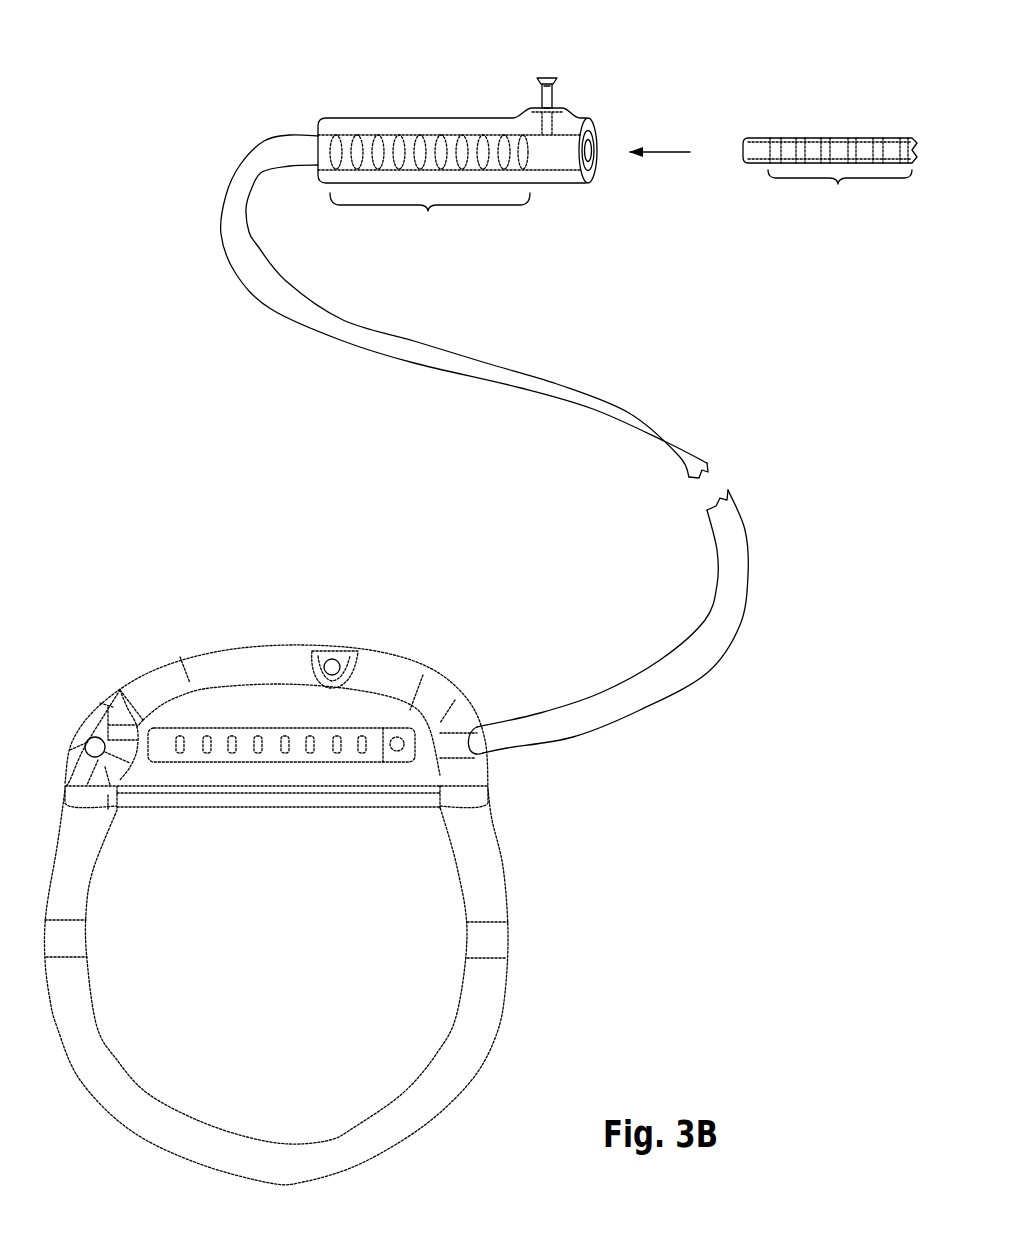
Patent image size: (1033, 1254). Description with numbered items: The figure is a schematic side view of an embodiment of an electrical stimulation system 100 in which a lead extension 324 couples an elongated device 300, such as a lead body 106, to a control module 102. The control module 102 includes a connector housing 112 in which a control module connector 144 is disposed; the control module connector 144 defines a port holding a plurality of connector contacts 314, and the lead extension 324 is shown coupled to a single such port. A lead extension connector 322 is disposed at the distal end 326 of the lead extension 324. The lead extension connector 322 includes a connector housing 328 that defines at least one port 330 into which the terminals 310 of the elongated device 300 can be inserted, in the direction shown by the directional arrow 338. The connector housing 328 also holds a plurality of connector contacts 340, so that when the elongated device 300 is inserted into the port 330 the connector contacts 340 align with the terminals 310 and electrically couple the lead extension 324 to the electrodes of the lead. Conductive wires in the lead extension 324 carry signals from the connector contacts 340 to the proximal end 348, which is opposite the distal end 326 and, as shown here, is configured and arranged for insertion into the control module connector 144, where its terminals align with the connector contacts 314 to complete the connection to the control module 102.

The electrical stimulation system 100 is at (699, 365).
The control module 102 is at (359, 893).
The lead body 106 is at (835, 138).
The connector housing 112 is at (377, 672).
The control module connector 144 is at (281, 686).
The elongated device 300 is at (830, 113).
The terminals 310 is at (840, 188).
The connector contact 314 is at (177, 733).
The lead extension connector 322 is at (415, 118).
The lead extension 324 is at (579, 374).
The distal end 326 is at (484, 127).
The connector housing 328 is at (360, 128).
The port 330 is at (606, 172).
The directional arrow 338 is at (667, 147).
The connector contacts 340 is at (430, 217).
The proximal end 348 is at (490, 704).